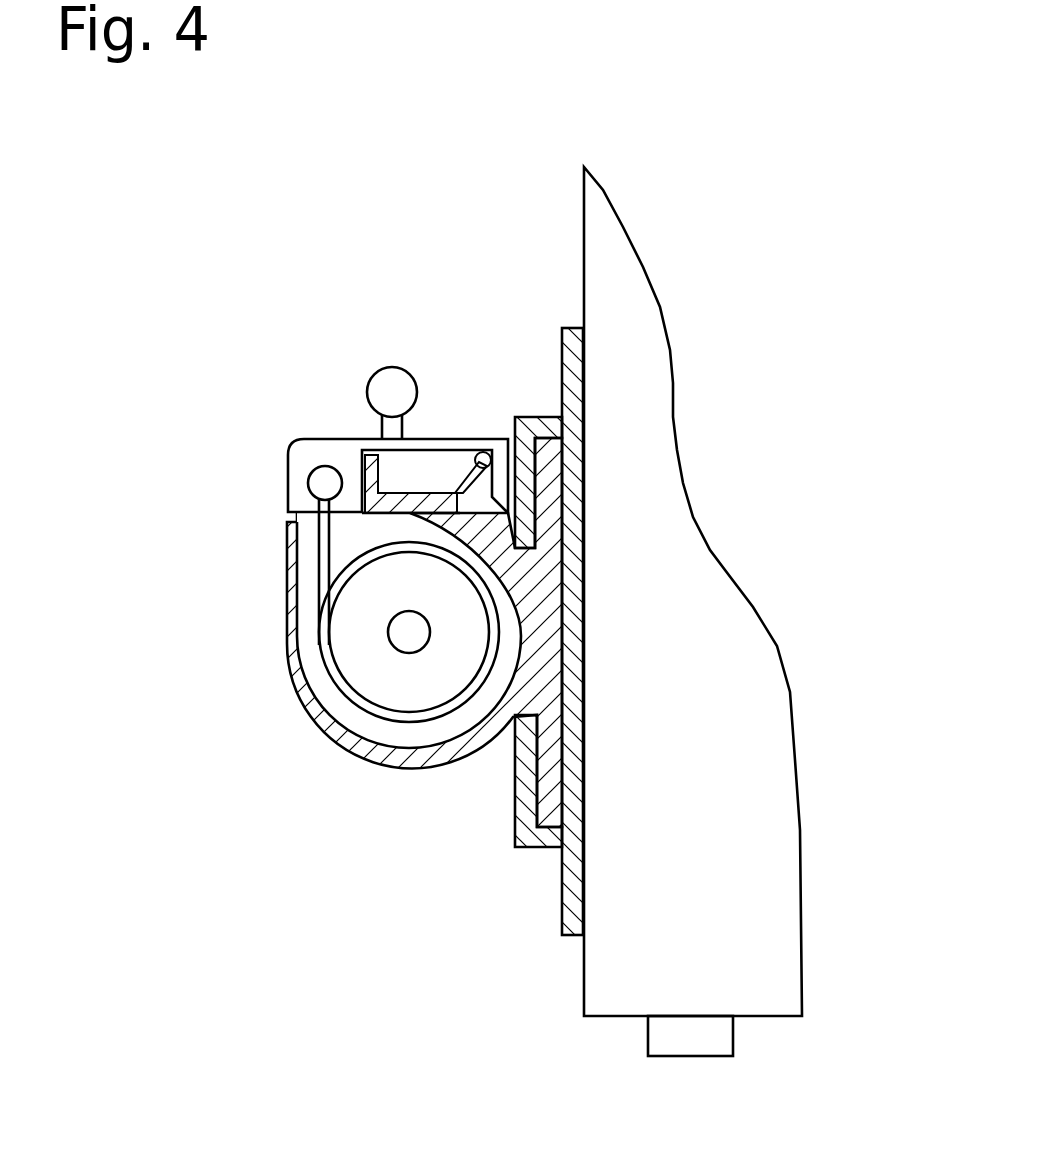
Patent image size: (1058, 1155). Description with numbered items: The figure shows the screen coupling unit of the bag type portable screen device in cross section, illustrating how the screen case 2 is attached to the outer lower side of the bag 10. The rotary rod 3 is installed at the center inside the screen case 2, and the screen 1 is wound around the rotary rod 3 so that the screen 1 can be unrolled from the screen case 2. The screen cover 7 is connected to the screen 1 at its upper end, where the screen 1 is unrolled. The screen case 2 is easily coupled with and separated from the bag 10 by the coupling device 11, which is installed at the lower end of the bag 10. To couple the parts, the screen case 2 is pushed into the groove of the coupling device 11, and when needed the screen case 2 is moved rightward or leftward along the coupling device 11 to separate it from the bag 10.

The screen 1 is at (325, 550).
The screen case 2 is at (358, 745).
The rotary rod 3 is at (347, 638).
The screen cover 7 is at (300, 457).
The bag 10 is at (762, 763).
The coupling device 11 is at (572, 342).